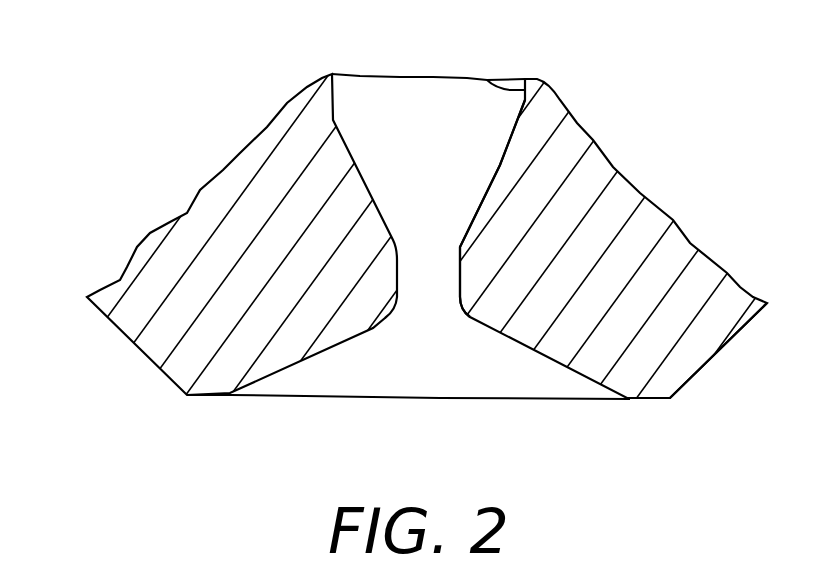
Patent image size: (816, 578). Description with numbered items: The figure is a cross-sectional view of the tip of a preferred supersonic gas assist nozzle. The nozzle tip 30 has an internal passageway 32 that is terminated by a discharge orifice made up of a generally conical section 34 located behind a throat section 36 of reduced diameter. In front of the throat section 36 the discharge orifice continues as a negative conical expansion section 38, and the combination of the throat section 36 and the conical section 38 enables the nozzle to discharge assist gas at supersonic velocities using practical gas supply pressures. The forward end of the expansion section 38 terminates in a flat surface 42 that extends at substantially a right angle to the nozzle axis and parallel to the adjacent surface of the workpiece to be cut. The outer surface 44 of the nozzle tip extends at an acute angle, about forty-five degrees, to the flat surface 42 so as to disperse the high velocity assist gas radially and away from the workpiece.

The nozzle tip 30 is at (421, 236).
The internal passageway 32 is at (487, 80).
The conical section 34 is at (500, 158).
The throat section 36 is at (458, 273).
The negative conical expansion section 38 is at (329, 352).
The flat surface 42 is at (636, 398).
The outer surface 44 is at (161, 370).